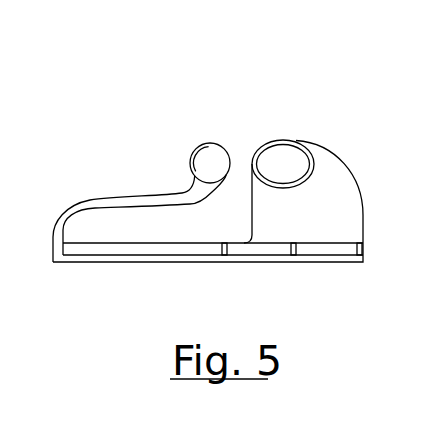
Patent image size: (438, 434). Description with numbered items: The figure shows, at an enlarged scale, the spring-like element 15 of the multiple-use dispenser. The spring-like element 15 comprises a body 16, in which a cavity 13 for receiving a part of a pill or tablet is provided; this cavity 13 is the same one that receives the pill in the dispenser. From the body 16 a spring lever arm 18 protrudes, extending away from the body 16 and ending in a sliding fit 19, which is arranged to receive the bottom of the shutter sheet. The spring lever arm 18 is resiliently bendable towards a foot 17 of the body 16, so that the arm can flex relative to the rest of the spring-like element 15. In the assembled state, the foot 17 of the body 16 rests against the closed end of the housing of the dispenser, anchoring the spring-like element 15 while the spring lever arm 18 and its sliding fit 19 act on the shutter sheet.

The cavity 13 is at (278, 165).
The spring-like element 15 is at (352, 147).
The body 16 is at (325, 225).
The foot 17 is at (162, 262).
The spring lever arm 18 is at (148, 203).
The sliding fit 19 is at (207, 158).